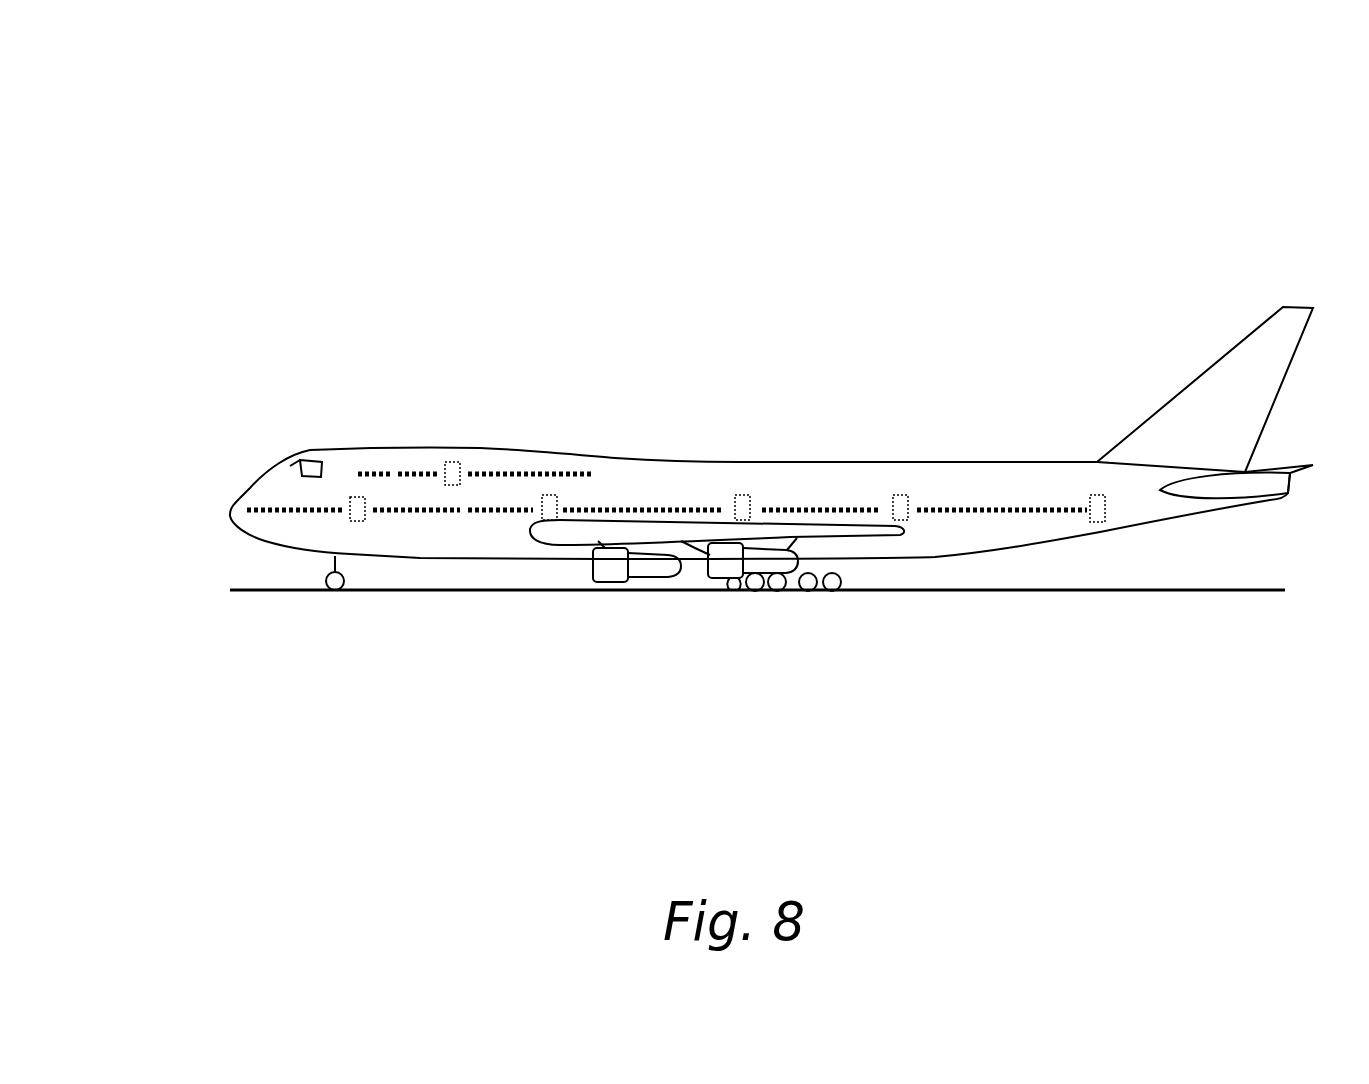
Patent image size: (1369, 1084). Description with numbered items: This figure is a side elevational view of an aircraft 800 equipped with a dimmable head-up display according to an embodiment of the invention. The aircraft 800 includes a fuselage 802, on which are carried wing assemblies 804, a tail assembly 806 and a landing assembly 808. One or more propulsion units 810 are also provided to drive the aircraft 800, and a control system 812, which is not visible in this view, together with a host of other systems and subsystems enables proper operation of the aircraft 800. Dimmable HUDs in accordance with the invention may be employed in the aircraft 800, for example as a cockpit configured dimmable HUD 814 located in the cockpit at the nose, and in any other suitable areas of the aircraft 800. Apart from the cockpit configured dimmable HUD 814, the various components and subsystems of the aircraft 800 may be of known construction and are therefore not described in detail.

The aircraft 800 is at (212, 122).
The fuselage 802 is at (942, 557).
The wing assemblies 804 is at (558, 533).
The tail assembly 806 is at (1193, 357).
The landing assembly 808 is at (767, 605).
The propulsion units 810 is at (610, 575).
The control system 812 is at (245, 548).
The cockpit configured dimmable HUD 814 is at (263, 443).